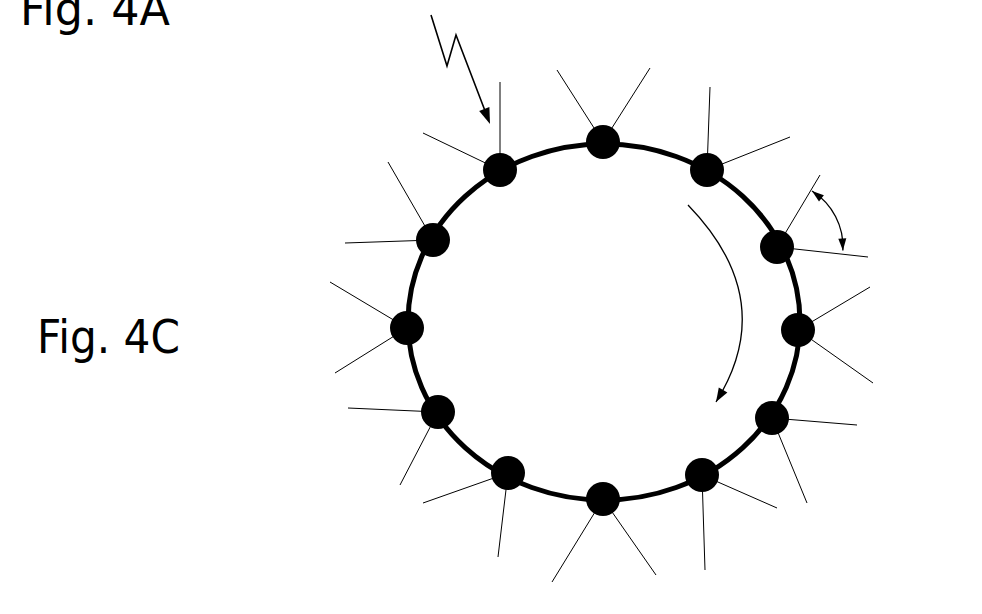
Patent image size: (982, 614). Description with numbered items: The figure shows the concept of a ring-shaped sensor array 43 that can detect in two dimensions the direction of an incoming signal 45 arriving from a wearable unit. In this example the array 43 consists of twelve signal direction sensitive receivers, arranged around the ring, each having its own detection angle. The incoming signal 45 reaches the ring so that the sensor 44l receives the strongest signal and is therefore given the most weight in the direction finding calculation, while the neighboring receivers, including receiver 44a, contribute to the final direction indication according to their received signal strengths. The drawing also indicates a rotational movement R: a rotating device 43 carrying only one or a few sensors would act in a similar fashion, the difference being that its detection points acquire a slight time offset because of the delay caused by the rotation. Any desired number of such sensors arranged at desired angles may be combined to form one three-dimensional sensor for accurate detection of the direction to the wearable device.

The ring-shaped sensor array 43 is at (350, 447).
The signal direction sensitive receiver 44a is at (618, 140).
The signal direction sensitive receiver 44l is at (482, 180).
The incoming signal 45 is at (475, 70).
The rotational movement R is at (715, 303).